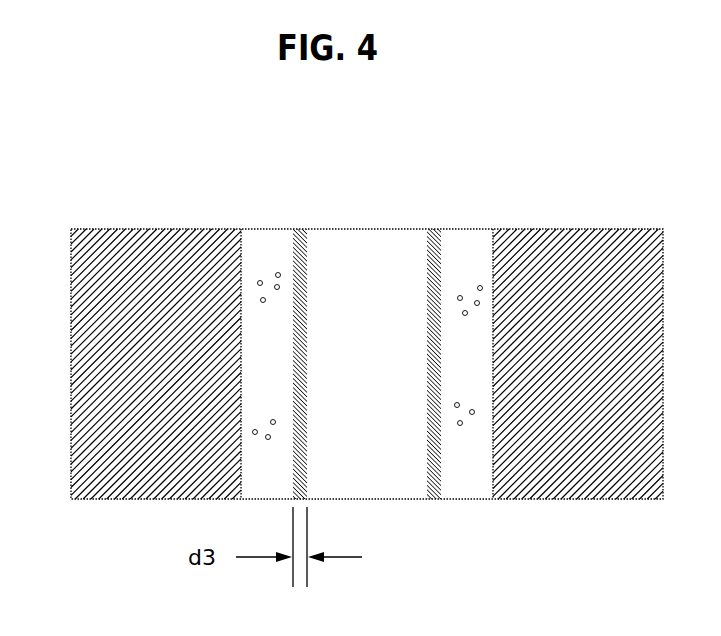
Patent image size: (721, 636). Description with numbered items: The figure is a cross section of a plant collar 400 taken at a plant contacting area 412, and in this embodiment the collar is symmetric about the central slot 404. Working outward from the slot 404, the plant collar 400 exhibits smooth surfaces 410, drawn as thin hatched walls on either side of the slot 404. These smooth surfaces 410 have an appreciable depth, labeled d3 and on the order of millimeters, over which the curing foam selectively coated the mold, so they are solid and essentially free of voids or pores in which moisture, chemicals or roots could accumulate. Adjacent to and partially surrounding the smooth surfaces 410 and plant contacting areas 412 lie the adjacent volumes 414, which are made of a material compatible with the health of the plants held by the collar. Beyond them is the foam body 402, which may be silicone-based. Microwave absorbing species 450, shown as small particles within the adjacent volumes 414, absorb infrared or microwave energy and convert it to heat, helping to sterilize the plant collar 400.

The plant collar 400 is at (534, 125).
The body 402 is at (108, 229).
The slot 404 is at (383, 568).
The smooth surfaces 410 is at (428, 245).
The plant contacting area 412 is at (300, 185).
The adjacent volumes 414 is at (243, 229).
The microwave absorbing species 450 is at (261, 447).